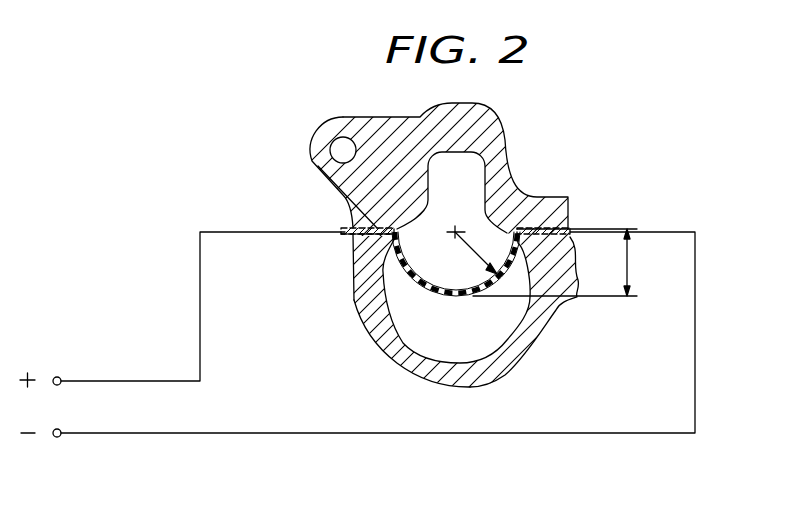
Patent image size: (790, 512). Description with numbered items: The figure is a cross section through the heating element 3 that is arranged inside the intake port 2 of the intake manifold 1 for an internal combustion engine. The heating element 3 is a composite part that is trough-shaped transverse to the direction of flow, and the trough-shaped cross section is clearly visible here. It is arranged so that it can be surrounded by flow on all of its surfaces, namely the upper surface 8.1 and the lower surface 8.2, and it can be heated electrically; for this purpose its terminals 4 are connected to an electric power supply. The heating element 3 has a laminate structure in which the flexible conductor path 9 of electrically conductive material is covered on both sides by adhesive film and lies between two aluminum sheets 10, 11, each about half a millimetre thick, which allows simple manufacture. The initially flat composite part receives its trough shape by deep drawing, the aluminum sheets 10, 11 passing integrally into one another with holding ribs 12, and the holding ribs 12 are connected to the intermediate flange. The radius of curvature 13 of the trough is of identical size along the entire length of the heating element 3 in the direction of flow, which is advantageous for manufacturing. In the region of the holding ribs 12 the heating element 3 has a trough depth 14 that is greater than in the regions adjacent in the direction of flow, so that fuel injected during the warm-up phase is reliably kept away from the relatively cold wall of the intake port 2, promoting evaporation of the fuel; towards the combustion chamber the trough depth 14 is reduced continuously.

The intake manifold 1 is at (363, 323).
The intake port 2 is at (508, 317).
The heating element 3 is at (358, 291).
The terminals 4 is at (57, 377).
The upper surface 8.1 is at (417, 236).
The lower surface 8.2 is at (432, 292).
The flexible conductor path 9 is at (343, 229).
The aluminum sheet 10 is at (311, 161).
The aluminum sheet 11 is at (351, 237).
The holding ribs 12 is at (561, 228).
The radius of curvature 13 is at (455, 229).
The trough depth 14 is at (561, 262).